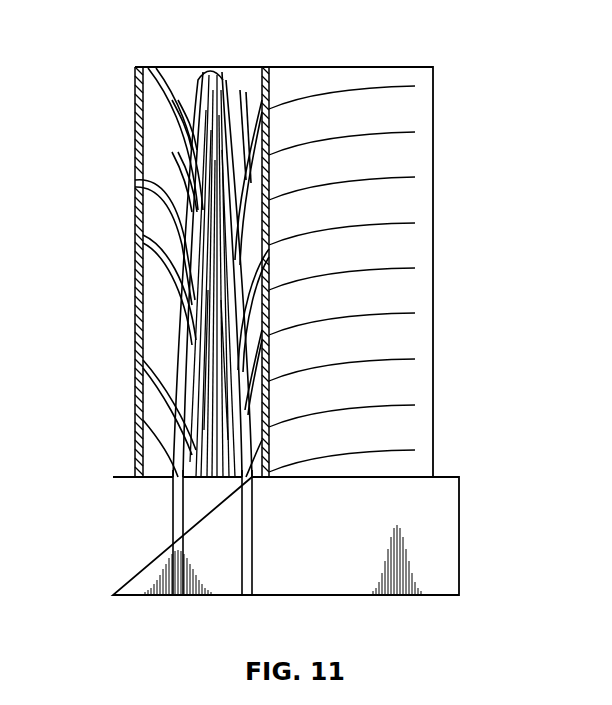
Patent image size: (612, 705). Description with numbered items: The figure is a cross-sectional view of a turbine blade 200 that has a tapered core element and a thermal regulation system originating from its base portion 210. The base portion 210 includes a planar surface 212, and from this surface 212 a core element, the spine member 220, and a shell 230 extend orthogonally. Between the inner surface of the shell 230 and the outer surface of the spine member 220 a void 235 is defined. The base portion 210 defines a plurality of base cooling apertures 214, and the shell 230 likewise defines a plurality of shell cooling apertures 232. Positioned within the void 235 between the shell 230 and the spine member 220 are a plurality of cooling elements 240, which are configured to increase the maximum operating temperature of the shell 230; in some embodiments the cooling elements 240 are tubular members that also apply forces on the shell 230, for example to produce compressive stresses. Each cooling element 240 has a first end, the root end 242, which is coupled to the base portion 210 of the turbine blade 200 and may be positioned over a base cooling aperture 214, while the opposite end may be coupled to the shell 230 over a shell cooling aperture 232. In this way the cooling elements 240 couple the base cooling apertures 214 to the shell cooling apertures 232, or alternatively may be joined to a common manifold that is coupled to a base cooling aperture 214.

The turbine blade 200 is at (125, 30).
The base portion 210 is at (450, 526).
The surface 212 is at (449, 477).
The base cooling apertures 214 is at (176, 533).
The spine member 220 is at (193, 443).
The shell 230 is at (420, 108).
The shell cooling apertures 232 is at (140, 183).
The void 235 is at (236, 75).
The cooling elements 240 is at (170, 67).
The root end 242 is at (178, 472).